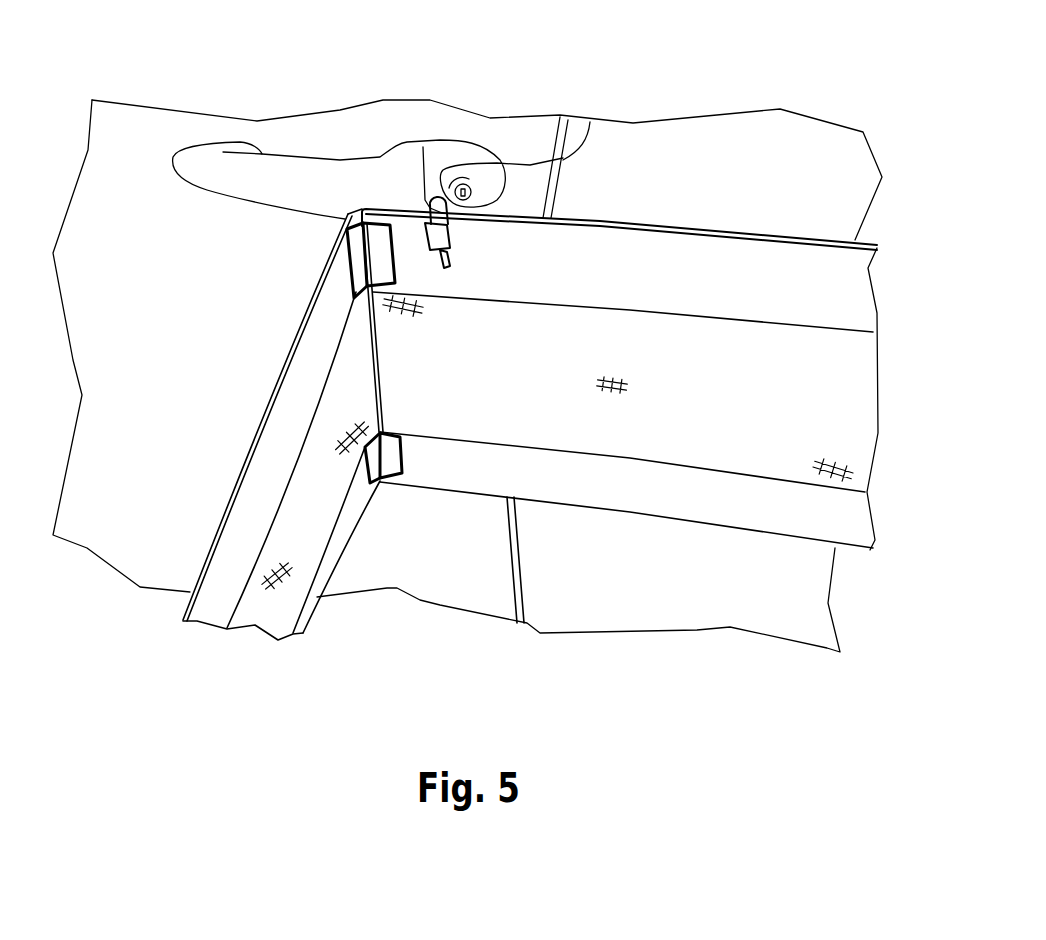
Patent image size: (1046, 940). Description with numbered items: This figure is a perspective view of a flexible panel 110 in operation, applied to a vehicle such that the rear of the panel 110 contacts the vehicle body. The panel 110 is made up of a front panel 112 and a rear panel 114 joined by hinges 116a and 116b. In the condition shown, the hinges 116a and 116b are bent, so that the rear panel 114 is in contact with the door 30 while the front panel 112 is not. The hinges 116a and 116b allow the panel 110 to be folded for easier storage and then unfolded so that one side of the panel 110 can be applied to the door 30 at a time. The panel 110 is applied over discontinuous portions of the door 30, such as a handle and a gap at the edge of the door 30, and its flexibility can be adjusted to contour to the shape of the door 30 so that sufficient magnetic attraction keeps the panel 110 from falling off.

The door 30 is at (512, 520).
The panel 110 is at (817, 302).
The front panel 112 is at (250, 610).
The rear panel 114 is at (780, 252).
The hinge 116a is at (371, 315).
The hinge 116b is at (385, 482).